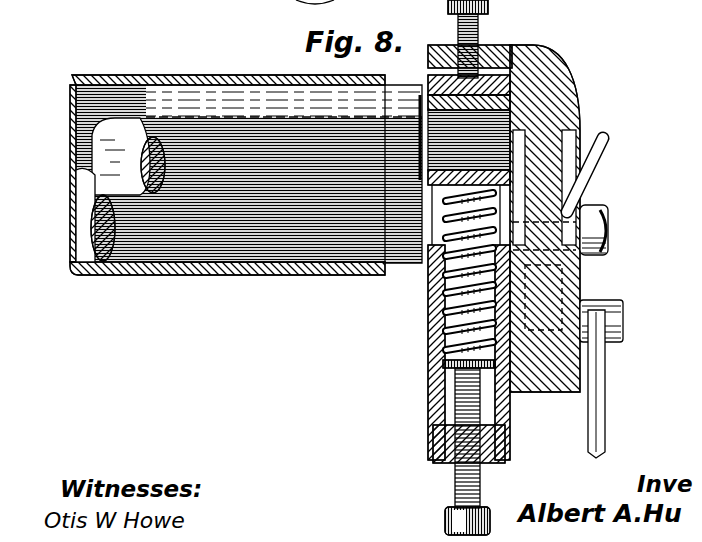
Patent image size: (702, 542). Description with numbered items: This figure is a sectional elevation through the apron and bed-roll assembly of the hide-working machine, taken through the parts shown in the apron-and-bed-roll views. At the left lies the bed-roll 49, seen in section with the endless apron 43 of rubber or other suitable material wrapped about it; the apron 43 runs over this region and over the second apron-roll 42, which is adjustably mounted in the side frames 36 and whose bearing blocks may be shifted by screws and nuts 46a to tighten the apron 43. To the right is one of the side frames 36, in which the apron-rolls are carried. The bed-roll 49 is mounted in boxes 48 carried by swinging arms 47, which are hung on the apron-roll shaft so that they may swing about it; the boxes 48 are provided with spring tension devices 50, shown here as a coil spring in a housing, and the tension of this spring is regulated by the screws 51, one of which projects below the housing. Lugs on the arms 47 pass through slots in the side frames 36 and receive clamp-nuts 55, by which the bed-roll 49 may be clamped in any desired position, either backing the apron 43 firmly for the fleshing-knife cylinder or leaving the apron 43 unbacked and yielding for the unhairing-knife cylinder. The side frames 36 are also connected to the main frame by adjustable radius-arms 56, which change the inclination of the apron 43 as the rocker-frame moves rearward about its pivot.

The side frames 36 is at (557, 100).
The second apron-roll 42 is at (100, 157).
The endless apron 43 is at (117, 75).
The nuts 46a is at (288, 11).
The swinging arms 47 is at (488, 82).
The boxes 48 is at (510, 98).
The bed-roll 49 is at (214, 98).
The spring tension devices 50 is at (430, 270).
The screws 51 is at (453, 478).
The clamp-nuts 55 is at (600, 197).
The adjustable radius-arms 56 is at (606, 400).